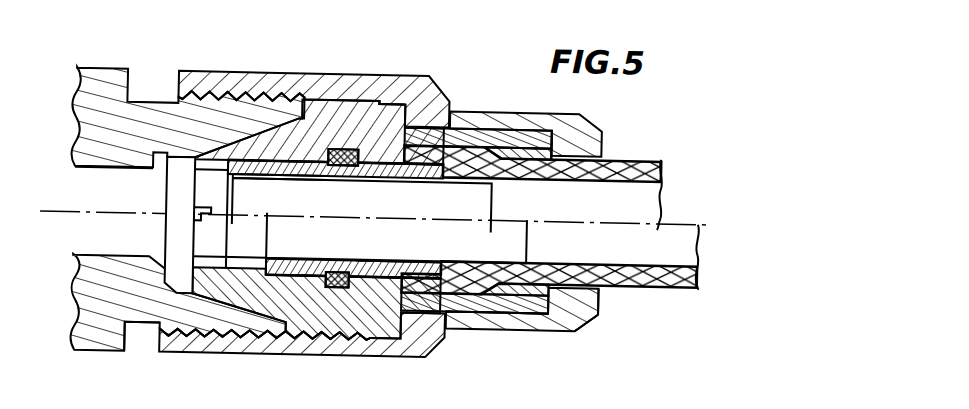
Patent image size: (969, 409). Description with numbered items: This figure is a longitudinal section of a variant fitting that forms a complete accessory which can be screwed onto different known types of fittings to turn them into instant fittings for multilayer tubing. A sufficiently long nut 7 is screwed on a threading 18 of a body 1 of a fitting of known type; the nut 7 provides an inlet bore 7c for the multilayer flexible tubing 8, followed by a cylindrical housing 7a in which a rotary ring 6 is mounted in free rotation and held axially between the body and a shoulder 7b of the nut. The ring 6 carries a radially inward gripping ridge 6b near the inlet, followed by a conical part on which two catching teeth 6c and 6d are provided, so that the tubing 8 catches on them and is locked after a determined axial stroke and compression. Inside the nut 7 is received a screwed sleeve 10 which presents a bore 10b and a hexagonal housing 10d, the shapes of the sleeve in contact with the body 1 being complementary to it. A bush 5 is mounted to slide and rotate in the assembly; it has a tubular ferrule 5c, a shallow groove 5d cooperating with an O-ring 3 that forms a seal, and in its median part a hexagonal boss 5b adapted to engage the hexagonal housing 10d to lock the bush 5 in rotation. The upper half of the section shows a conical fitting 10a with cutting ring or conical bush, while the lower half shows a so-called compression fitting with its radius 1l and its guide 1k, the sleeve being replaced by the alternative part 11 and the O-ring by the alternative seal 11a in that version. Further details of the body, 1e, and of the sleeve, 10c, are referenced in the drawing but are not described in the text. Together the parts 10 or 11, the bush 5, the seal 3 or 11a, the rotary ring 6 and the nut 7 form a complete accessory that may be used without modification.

The body 1 is at (100, 126).
The internal shoulder of body 1e is at (97, 174).
The guide 1k is at (175, 337).
The radius 1l is at (237, 340).
The O-ring 3 is at (337, 166).
The bush 5 is at (267, 262).
The boss 5b is at (417, 285).
The tubular ferrule 5c is at (283, 174).
The shallow groove 5d is at (373, 263).
The rotary ring 6 is at (420, 128).
The gripping ridge 6b is at (543, 143).
The catching tooth 6c is at (500, 137).
The catching tooth 6d is at (543, 133).
The nut 7 is at (587, 131).
The cylindrical housing 7a is at (500, 311).
The shoulder 7b is at (567, 316).
The inlet bore 7c is at (580, 281).
The multilayer flexible tubing 8 is at (667, 284).
The screwed sleeve 10 is at (308, 125).
The conical fitting 10a is at (263, 172).
The bore 10b is at (210, 163).
The insulator key 10c is at (200, 214).
The hexagonal housing 10d is at (385, 100).
The part 11 is at (313, 308).
The seal 11a is at (337, 335).
The threading 18 is at (208, 77).